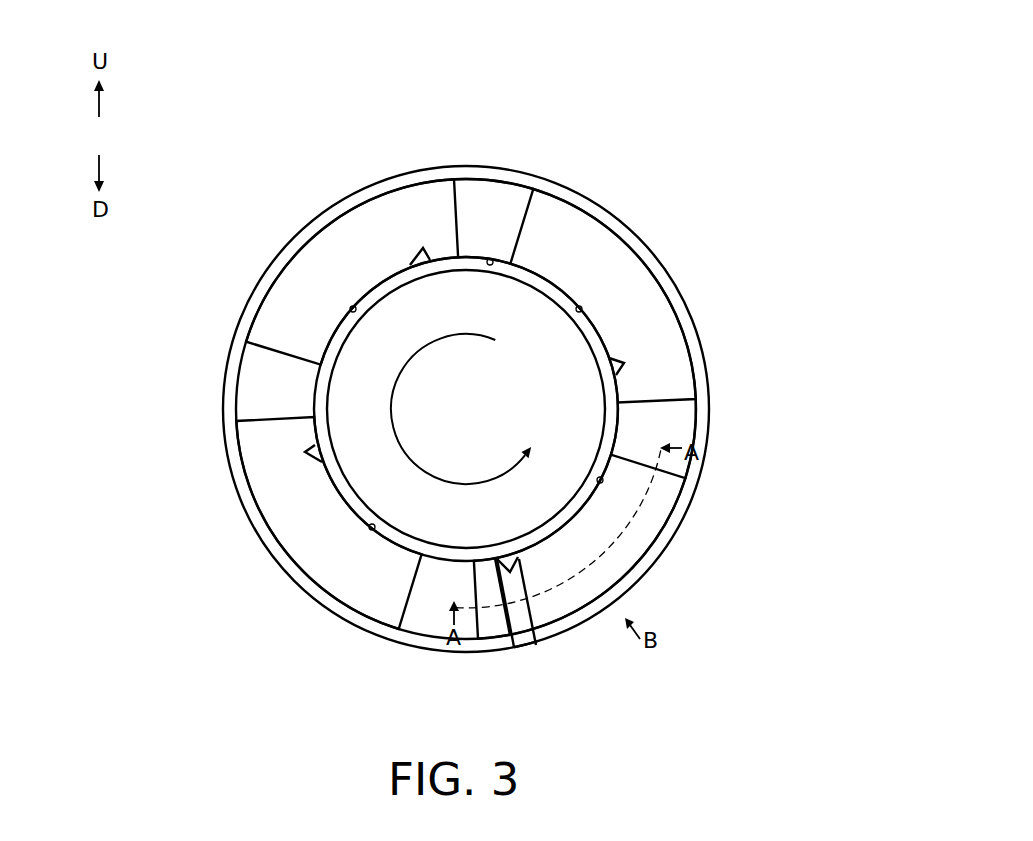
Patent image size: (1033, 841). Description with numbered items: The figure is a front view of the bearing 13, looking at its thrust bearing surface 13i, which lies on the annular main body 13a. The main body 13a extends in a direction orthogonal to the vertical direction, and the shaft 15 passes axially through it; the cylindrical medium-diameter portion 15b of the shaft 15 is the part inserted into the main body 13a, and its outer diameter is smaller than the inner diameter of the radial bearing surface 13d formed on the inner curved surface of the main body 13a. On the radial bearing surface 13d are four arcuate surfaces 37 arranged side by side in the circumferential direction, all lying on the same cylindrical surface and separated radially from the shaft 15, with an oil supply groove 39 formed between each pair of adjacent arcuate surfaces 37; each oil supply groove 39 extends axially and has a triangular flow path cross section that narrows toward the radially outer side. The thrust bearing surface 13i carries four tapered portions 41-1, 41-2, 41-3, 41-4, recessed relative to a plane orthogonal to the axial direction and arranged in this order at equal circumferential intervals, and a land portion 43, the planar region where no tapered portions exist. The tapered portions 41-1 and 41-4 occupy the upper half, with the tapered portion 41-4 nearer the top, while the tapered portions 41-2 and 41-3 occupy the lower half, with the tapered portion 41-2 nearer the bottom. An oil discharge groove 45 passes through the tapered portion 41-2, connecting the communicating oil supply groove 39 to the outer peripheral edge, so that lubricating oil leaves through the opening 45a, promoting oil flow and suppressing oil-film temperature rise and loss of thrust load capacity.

The bearing 13 is at (268, 69).
The main body 13a is at (232, 348).
The radial bearing surface 13d is at (491, 259).
The thrust bearing surface 13i is at (478, 192).
The shaft 15 is at (415, 541).
The medium-diameter portion 15b is at (490, 422).
The arcuate surface 37 is at (351, 307).
The oil supply groove 39 is at (423, 249).
The tapered portion 41-1 is at (598, 232).
The tapered portion 41-2 is at (608, 568).
The tapered portion 41-3 is at (300, 534).
The tapered portion 41-4 is at (353, 237).
The land portion 43 is at (684, 414).
The oil discharge groove 45 is at (520, 618).
The opening 45a is at (525, 648).